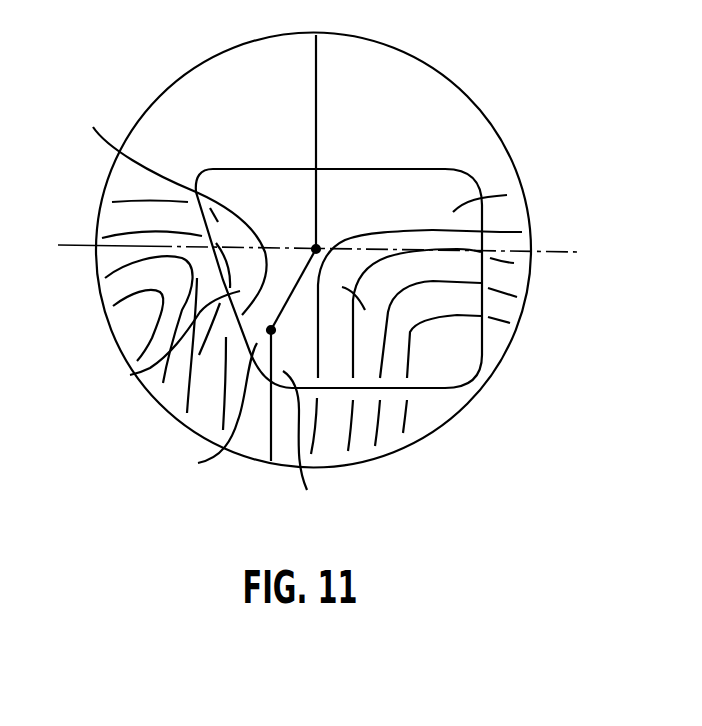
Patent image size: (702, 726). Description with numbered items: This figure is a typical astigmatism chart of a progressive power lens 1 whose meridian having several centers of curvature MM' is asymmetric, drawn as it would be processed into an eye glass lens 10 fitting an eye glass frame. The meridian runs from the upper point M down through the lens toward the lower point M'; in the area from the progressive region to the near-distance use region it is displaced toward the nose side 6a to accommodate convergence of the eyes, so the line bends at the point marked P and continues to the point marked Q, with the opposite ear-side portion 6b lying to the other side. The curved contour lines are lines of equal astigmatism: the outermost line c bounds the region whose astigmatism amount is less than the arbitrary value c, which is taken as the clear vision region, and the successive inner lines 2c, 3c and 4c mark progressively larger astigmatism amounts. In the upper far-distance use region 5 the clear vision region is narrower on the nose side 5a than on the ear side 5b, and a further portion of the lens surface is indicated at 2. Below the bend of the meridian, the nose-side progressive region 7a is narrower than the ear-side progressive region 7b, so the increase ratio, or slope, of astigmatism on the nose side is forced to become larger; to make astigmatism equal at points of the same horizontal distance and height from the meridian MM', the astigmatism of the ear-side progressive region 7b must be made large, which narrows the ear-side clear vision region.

The progressive power lens 1 is at (503, 102).
The lens surface region 2 is at (480, 153).
The far-distance use region 5 is at (420, 97).
The eye glass lens 10 is at (467, 183).
The nose side of far-distance use region 5a is at (172, 205).
The ear side of far-distance use region 5b is at (507, 195).
The nose side of near-distance use region 6a is at (210, 378).
The right intermediate region line 6b is at (307, 490).
The nose-side progressive region 7a is at (130, 375).
The ear-side progressive region 7b is at (365, 310).
The arbitrary astigmatism value c is at (317, 319).
The iso-astigmatism line 2c is at (315, 333).
The iso-astigmatism line 3c is at (316, 351).
The iso-astigmatism line 4c is at (314, 361).
The upper end of meridian having several centers of curvature M is at (317, 124).
The lower end of meridian having several centers of curvature M' is at (269, 416).
The distance reference point P is at (316, 246).
The near reference point Q is at (274, 333).